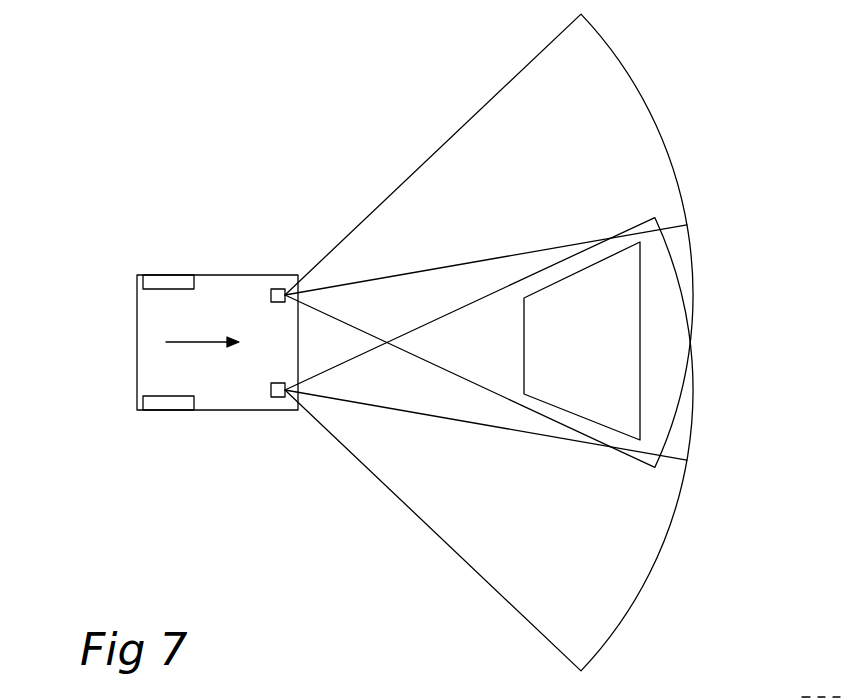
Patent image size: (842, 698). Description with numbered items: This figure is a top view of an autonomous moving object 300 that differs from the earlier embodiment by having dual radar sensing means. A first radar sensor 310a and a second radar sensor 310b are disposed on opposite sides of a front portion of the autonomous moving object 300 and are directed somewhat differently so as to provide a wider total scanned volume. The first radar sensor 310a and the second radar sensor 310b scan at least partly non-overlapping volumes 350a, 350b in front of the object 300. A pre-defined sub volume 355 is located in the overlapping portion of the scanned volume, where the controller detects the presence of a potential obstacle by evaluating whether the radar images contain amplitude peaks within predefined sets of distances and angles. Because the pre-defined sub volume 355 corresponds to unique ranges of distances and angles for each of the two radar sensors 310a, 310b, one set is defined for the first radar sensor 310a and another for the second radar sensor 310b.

The autonomous moving object 300 is at (218, 275).
The first radar sensor 310a is at (273, 288).
The second radar sensor 310b is at (273, 397).
The scanned volume of the first radar sensor 350a is at (428, 134).
The scanned volume of the second radar sensor 350b is at (428, 566).
The pre-defined sub volume 355 is at (640, 385).